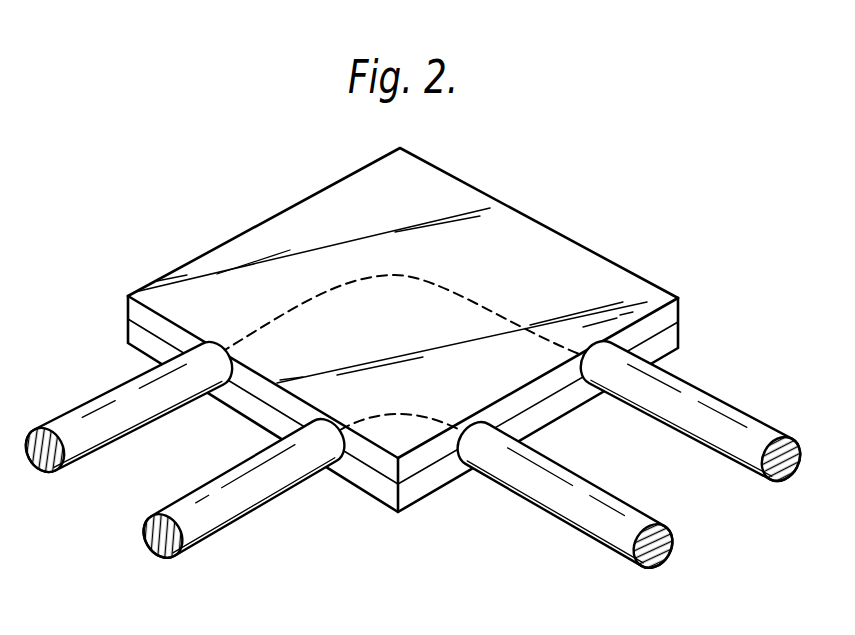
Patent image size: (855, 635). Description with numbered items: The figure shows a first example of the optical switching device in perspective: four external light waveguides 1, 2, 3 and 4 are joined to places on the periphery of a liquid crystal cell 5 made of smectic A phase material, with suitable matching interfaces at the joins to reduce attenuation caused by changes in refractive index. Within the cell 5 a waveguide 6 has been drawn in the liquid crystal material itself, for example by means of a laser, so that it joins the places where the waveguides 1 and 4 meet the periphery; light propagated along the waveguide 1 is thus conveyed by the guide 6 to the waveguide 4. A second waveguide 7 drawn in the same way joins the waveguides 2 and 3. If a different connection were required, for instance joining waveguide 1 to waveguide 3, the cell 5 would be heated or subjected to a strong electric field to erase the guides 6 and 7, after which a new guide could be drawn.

The light waveguide 1 is at (98, 396).
The light waveguide 2 is at (209, 486).
The light waveguide 3 is at (618, 500).
The light waveguide 4 is at (702, 388).
The liquid crystal cell 5 is at (462, 182).
The waveguide 6 is at (466, 293).
The second waveguide 7 is at (404, 415).